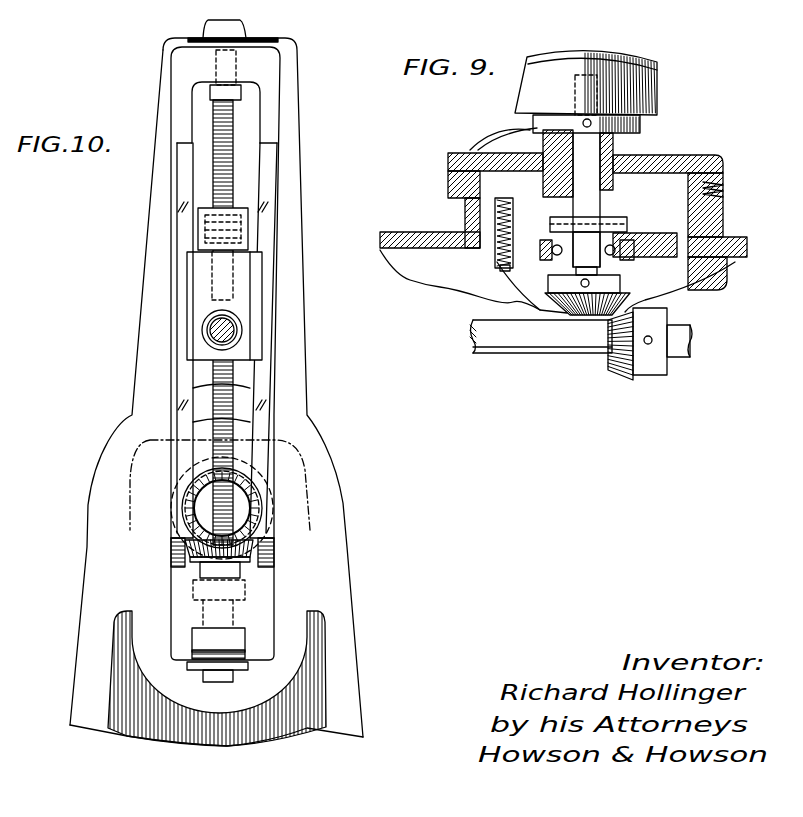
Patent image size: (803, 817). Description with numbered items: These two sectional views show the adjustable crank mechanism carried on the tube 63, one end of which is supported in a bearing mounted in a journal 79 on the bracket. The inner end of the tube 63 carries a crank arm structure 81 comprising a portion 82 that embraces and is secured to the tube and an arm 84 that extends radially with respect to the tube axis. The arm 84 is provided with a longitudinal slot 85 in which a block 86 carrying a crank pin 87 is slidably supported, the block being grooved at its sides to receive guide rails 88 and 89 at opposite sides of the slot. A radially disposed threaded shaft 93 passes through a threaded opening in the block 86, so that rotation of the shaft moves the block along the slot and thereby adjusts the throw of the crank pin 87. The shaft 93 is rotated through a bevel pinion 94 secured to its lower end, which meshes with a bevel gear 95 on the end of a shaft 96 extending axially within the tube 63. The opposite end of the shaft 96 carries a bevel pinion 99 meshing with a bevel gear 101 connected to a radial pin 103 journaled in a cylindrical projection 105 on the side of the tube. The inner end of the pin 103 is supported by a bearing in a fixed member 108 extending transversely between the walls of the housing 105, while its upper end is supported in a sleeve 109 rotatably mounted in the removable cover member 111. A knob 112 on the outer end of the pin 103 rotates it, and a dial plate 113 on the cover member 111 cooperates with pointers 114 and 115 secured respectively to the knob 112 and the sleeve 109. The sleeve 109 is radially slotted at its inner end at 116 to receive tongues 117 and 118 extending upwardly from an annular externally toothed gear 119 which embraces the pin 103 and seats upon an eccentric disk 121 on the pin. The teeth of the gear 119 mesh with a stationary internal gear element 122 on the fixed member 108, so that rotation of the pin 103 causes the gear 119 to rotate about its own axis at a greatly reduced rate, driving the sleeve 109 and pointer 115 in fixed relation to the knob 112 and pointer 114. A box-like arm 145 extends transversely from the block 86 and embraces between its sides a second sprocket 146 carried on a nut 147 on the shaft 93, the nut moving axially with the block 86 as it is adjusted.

In FIG. 9, the tube 63 is at (746, 250).
In FIG. 10, the journal 79 is at (355, 688).
In FIG. 10, the crank arm structure 81 is at (303, 400).
In FIG. 10, the portion of the crank arm structure 82 is at (300, 470).
In FIG. 10, the arm 84 is at (300, 291).
In FIG. 10, the longitudinal slot 85 is at (250, 178).
In FIG. 10, the block 86 is at (200, 279).
In FIG. 10, the crank pin 87 is at (212, 331).
In FIG. 10, the guide rail 88 is at (262, 200).
In FIG. 10, the guide rail 89 is at (188, 167).
In FIG. 10, the shaft 93 is at (212, 397).
In FIG. 10, the bevel pinion 94 is at (247, 560).
In FIG. 10, the bevel gear 95 is at (196, 470).
In FIG. 10, the shaft 96 is at (212, 519).
In FIG. 9, the shaft 96 is at (505, 343).
In FIG. 9, the bevel pinion 99 is at (633, 378).
In FIG. 9, the bevel gear 101 is at (572, 317).
In FIG. 9, the radial pin 103 is at (628, 150).
In FIG. 9, the cylindrical projection 105 is at (705, 216).
In FIG. 9, the fixed member 108 is at (530, 262).
In FIG. 9, the sleeve 109 is at (655, 163).
In FIG. 9, the removable cover member 111 is at (458, 177).
In FIG. 9, the knob 112 is at (604, 52).
In FIG. 9, the dial plate 113 is at (460, 154).
In FIG. 9, the pointer 114 is at (487, 143).
In FIG. 9, the pointer 115 is at (512, 140).
In FIG. 9, the radial slot 116 is at (612, 201).
In FIG. 9, the tongue 117 is at (640, 207).
In FIG. 9, the tongue 118 is at (535, 206).
In FIG. 9, the annular externally toothed gear 119 is at (530, 224).
In FIG. 9, the eccentric disk 121 is at (690, 231).
In FIG. 9, the internal gear element 122 is at (496, 210).
In FIG. 10, the box-like arm 145 is at (205, 211).
In FIG. 10, the second sprocket 146 is at (200, 232).
In FIG. 10, the nut 147 is at (250, 225).